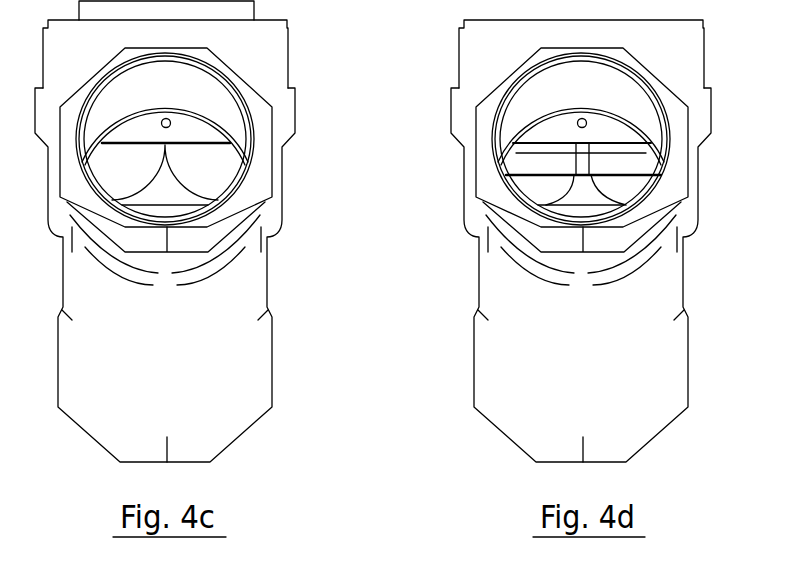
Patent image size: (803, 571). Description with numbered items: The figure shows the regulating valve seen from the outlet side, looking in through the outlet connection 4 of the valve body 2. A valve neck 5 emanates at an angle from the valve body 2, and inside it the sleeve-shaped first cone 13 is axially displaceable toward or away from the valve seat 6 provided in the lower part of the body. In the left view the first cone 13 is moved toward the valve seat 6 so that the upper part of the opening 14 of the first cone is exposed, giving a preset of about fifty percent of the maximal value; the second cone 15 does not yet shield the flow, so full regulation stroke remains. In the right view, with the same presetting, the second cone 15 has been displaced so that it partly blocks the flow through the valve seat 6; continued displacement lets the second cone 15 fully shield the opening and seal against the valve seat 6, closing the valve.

In FIG. 4C, the valve body 2 is at (272, 345).
In FIG. 4D, the valve body 2 is at (473, 345).
In FIG. 4C, the outlet connection 4 is at (258, 115).
In FIG. 4D, the outlet connection 4 is at (485, 115).
In FIG. 4C, the valve neck 5 is at (278, 65).
In FIG. 4D, the valve neck 5 is at (478, 68).
In FIG. 4C, the valve seat 6 is at (165, 208).
In FIG. 4D, the valve seat 6 is at (573, 210).
In FIG. 4C, the first cone 13 is at (220, 170).
In FIG. 4D, the first cone 13 is at (527, 187).
In FIG. 4C, the opening of the first cone 14 is at (172, 188).
In FIG. 4D, the opening of the first cone 14 is at (578, 190).
In FIG. 4D, the second cone 15 is at (525, 161).